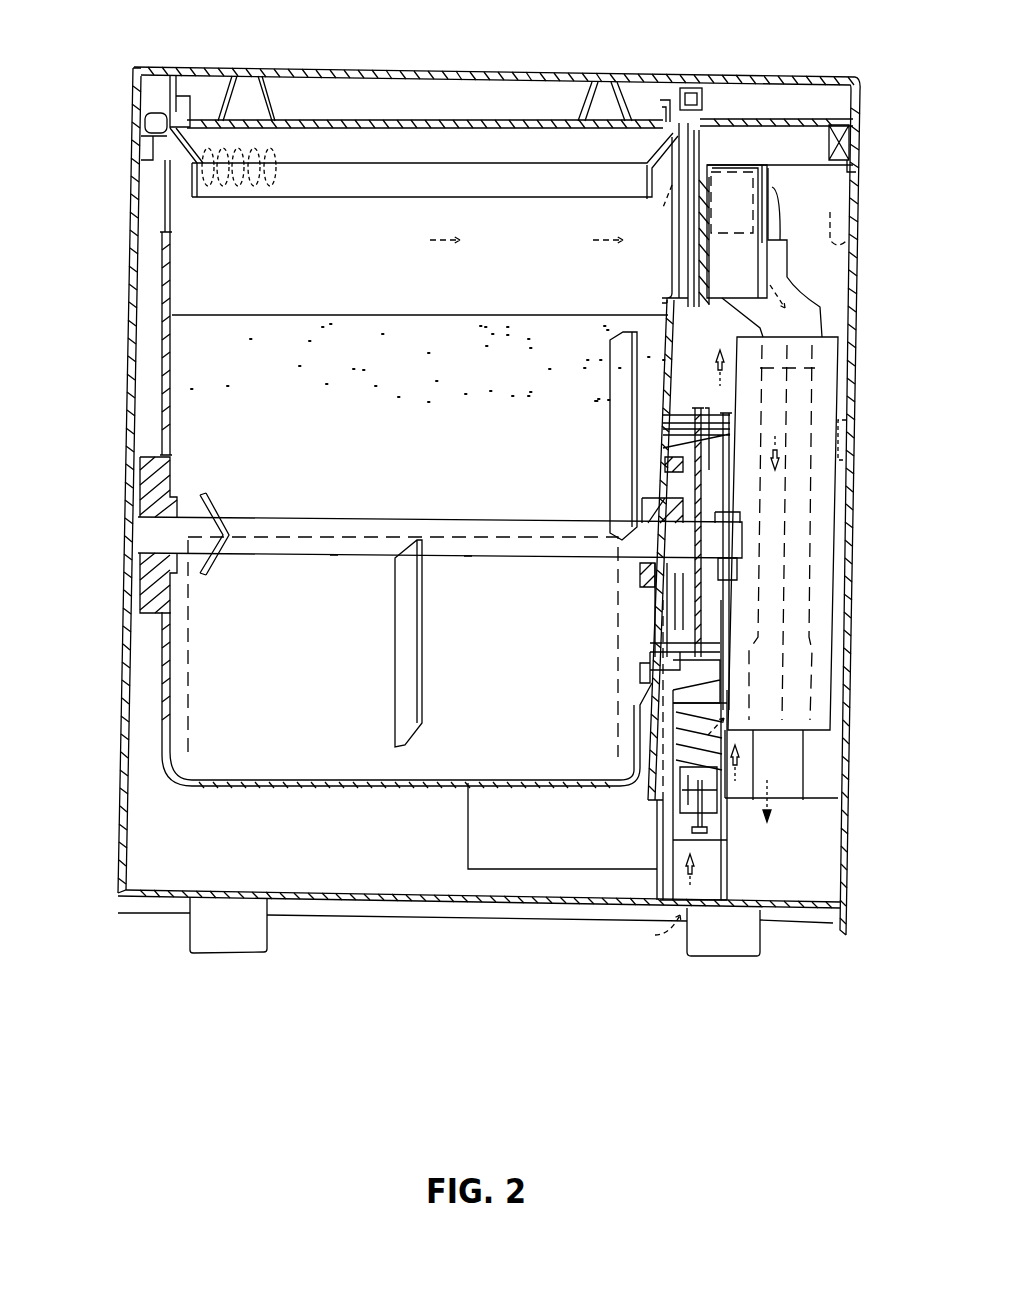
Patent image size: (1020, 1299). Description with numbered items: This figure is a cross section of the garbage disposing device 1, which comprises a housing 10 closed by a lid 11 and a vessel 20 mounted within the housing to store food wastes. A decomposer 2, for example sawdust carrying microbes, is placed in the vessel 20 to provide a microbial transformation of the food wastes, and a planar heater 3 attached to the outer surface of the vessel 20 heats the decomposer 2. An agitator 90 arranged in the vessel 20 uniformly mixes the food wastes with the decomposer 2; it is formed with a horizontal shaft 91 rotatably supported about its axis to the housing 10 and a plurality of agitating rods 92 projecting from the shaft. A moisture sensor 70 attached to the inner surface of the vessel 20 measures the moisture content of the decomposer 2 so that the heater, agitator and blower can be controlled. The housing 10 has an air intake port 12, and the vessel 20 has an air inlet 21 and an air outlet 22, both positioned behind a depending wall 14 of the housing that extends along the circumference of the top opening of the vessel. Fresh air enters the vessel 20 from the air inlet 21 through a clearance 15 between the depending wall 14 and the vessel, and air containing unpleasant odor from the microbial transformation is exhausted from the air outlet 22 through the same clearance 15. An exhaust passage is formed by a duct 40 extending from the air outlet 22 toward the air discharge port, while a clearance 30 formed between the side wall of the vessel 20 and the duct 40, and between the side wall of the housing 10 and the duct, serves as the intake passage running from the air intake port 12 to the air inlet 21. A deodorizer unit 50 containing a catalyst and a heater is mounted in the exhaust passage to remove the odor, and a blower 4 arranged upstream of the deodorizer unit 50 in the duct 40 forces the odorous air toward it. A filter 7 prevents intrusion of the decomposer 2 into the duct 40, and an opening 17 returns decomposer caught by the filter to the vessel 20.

The garbage disposing device 1 is at (119, 691).
The decomposer 2 is at (260, 350).
The planar heater 3 is at (153, 767).
The blower 4 is at (745, 185).
The filter 7 is at (682, 150).
The housing 10 is at (132, 328).
The lid 11 is at (340, 68).
The air intake port 12 is at (700, 905).
The depending wall 14 is at (185, 128).
The clearance 15 is at (183, 173).
The opening 17 is at (667, 302).
The vessel 20 is at (165, 737).
The air inlet 21 is at (210, 188).
The air outlet 22 is at (703, 190).
The clearance 30 is at (703, 397).
The duct 40 is at (778, 193).
The deodorizer unit 50 is at (808, 512).
The moisture sensor 70 is at (645, 678).
The agitator 90 is at (177, 537).
The horizontal shaft 91 is at (333, 556).
The agitating rods 92 is at (404, 722).